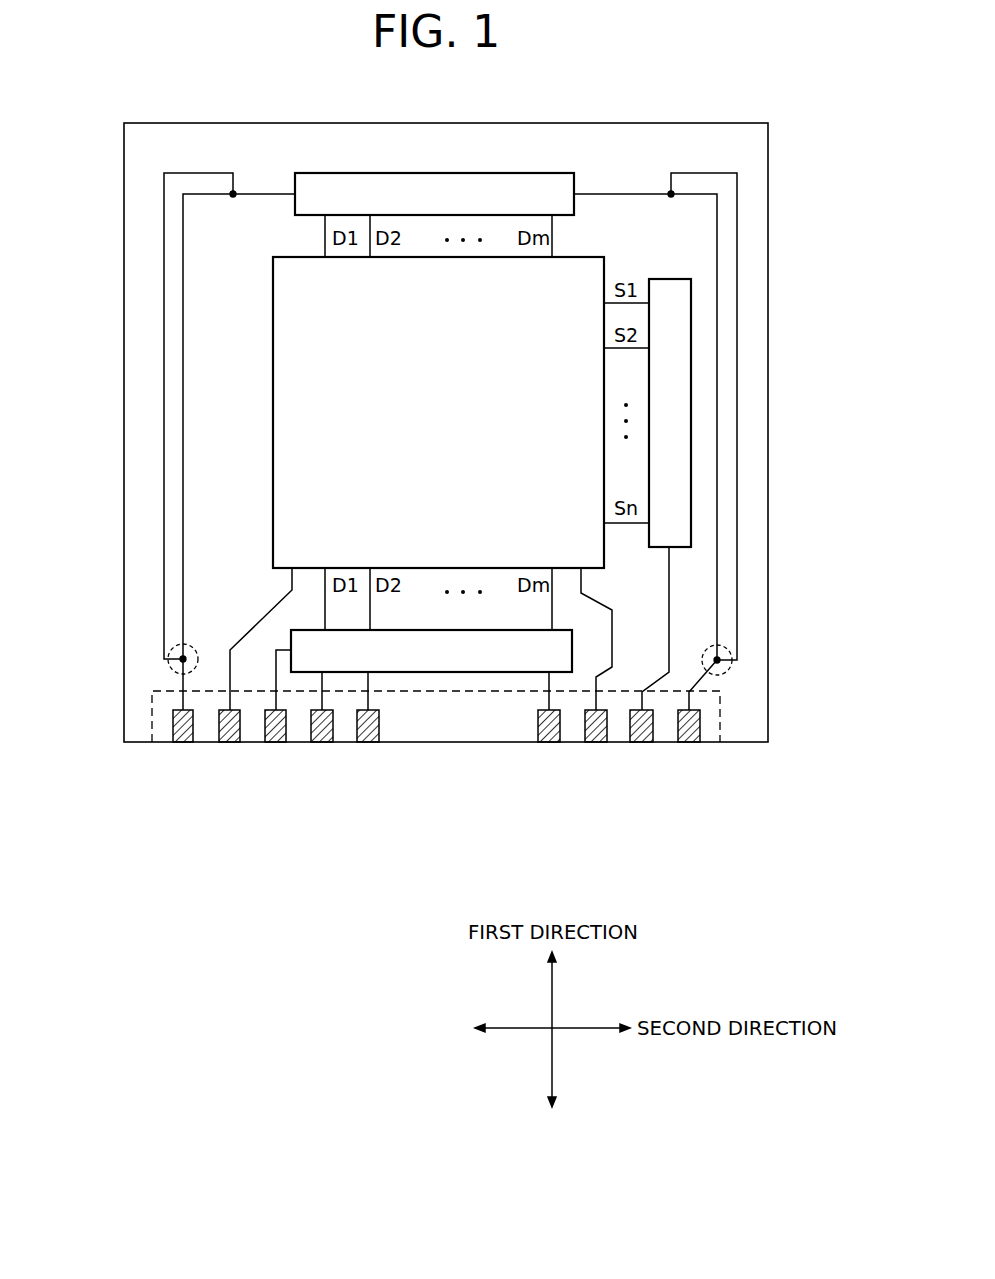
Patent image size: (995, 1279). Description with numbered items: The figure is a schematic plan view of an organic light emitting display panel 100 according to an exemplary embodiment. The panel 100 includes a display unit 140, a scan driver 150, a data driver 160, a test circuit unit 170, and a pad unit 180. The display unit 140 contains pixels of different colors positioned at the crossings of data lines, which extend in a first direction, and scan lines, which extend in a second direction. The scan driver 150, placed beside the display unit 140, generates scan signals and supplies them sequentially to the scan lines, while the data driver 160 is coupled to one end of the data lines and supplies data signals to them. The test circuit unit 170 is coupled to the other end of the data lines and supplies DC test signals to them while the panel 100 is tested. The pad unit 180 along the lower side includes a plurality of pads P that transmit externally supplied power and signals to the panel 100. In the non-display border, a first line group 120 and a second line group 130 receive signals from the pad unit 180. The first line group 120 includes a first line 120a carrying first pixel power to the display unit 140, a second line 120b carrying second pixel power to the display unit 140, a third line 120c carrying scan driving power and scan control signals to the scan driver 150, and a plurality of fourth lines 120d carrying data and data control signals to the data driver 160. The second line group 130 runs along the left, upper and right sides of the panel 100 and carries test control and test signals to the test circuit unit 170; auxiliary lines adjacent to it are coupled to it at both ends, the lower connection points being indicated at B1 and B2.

The organic light emitting display panel 100 is at (678, 97).
The test circuit unit 170 is at (437, 173).
The display unit 140 is at (575, 253).
The scan driver 150 is at (671, 279).
The data driver 160 is at (465, 628).
The second line group 130 is at (183, 318).
The first branch node B1 is at (175, 651).
The second branch node B2 is at (726, 651).
The pad unit 180 is at (152, 702).
The pad P is at (172, 721).
The first line group 120 is at (663, 822).
The first line 120a is at (231, 678).
The second line 120b is at (608, 672).
The third line 120c is at (655, 682).
The fourth lines 120d is at (545, 697).